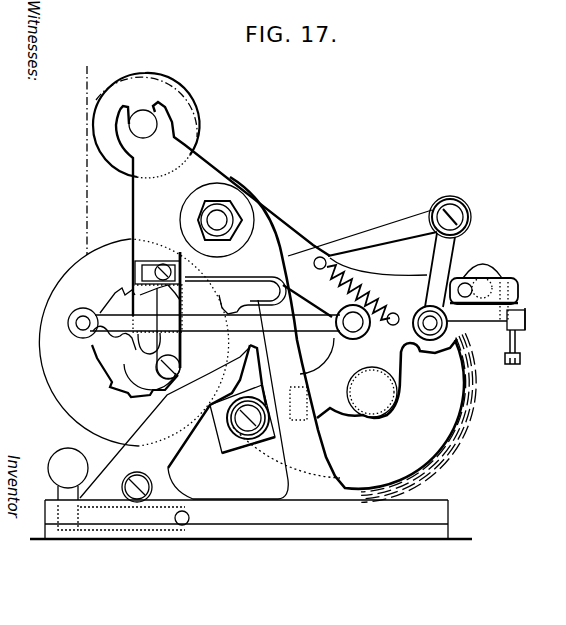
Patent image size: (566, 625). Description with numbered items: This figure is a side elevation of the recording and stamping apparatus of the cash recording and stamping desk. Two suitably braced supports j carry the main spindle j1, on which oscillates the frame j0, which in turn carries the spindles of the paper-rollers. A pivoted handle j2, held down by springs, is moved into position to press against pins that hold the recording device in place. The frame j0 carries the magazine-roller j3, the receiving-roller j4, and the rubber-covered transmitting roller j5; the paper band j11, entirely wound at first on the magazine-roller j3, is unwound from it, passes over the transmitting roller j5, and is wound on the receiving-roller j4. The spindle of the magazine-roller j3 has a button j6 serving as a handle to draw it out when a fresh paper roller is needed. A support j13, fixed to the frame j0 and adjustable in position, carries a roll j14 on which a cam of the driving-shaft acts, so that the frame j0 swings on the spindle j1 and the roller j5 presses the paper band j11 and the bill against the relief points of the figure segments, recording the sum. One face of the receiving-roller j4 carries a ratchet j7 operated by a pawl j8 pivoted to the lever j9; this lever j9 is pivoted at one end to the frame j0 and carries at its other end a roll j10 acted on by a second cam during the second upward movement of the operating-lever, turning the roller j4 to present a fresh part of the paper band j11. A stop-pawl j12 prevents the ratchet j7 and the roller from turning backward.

The supports j is at (257, 233).
The frame j0 is at (332, 417).
The main spindle j1 is at (218, 216).
The pivoted handle j2 is at (68, 489).
The magazine-roller j3 is at (387, 385).
The receiving-roller j4 is at (133, 342).
The transmitting roller j5 is at (146, 125).
The button j6 is at (380, 407).
The ratchet j7 is at (219, 324).
The pawl j8 is at (333, 242).
The lever j9 is at (445, 259).
The roll j10 is at (450, 206).
The paper band j11 is at (462, 450).
The stop-pawl j12 is at (210, 377).
The support j13 is at (522, 298).
The roll j14 is at (500, 273).